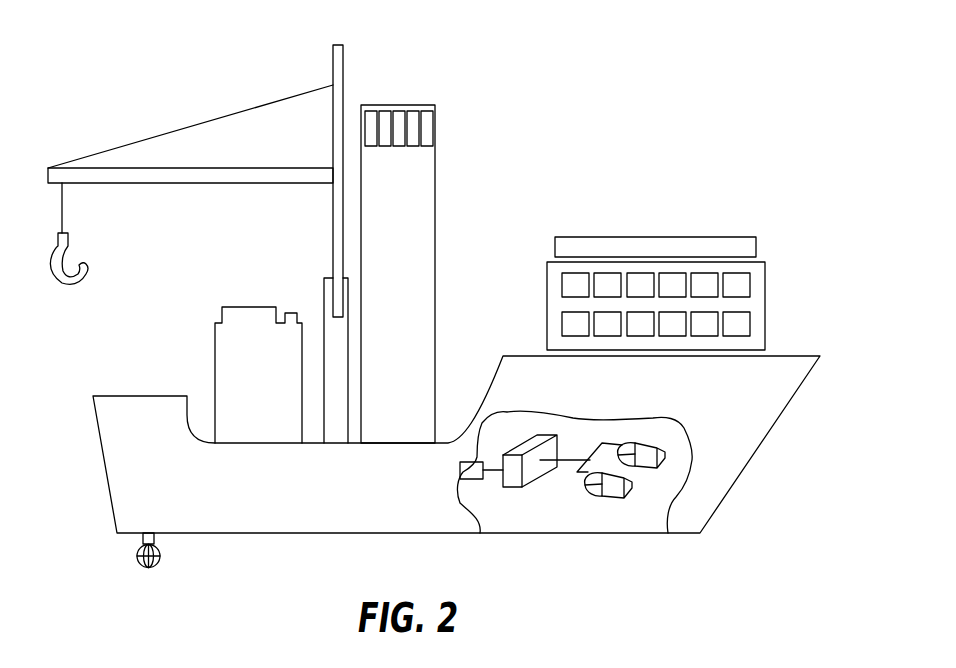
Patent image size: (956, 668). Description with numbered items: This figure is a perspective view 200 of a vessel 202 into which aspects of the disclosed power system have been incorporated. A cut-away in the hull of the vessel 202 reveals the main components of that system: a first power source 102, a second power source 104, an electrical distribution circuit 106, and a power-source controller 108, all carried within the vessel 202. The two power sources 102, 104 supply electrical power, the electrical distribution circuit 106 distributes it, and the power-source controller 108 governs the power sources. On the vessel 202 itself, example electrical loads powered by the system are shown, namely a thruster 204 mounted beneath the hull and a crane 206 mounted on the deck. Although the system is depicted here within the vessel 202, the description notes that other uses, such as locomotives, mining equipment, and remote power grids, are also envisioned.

The perspective view 200 is at (603, 72).
The vessel 202 is at (767, 310).
The thruster 204 is at (137, 556).
The crane 206 is at (202, 122).
The first power source 102 is at (618, 497).
The second power source 104 is at (638, 445).
The electrical distribution circuit 106 is at (568, 458).
The power-source controller 108 is at (515, 487).